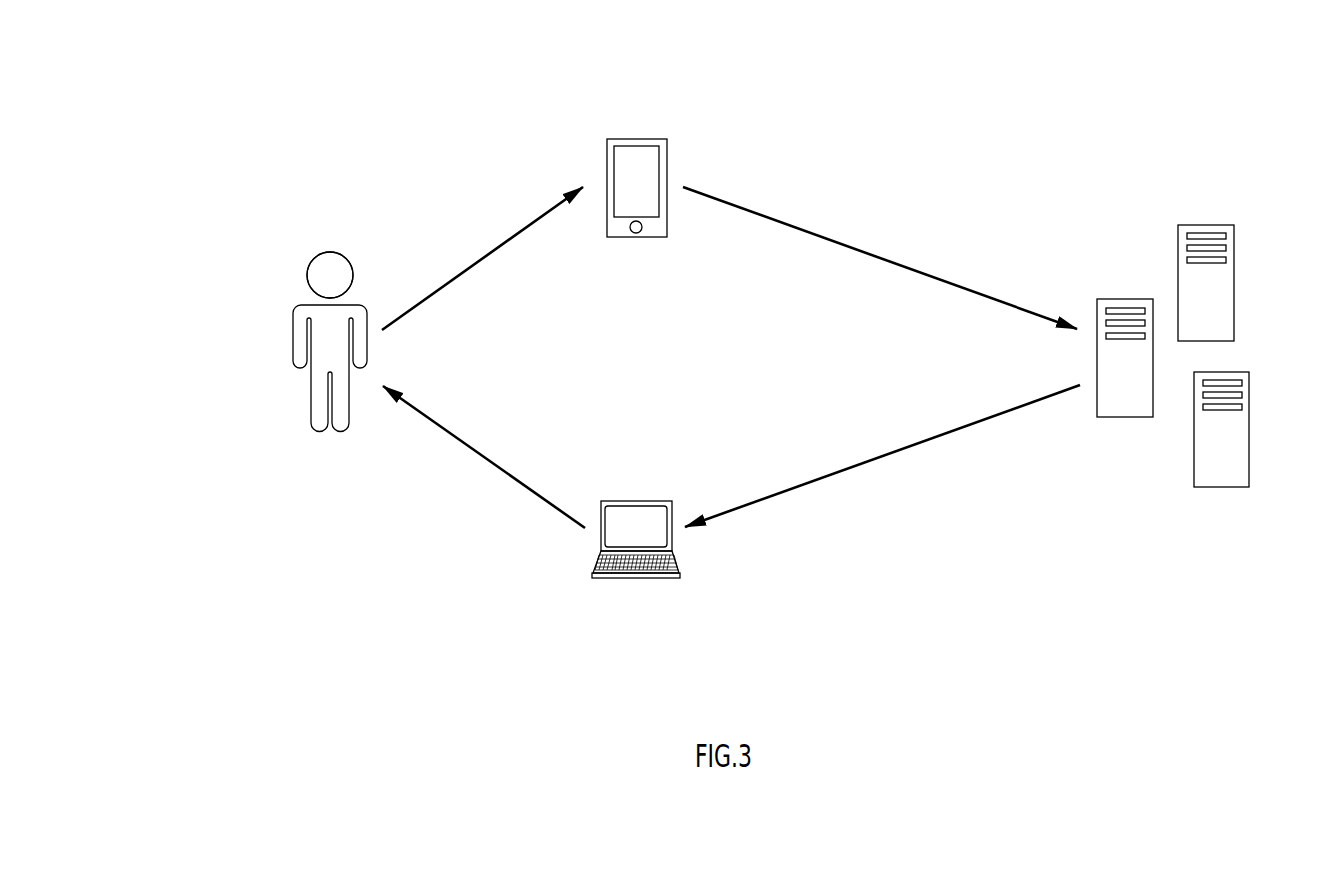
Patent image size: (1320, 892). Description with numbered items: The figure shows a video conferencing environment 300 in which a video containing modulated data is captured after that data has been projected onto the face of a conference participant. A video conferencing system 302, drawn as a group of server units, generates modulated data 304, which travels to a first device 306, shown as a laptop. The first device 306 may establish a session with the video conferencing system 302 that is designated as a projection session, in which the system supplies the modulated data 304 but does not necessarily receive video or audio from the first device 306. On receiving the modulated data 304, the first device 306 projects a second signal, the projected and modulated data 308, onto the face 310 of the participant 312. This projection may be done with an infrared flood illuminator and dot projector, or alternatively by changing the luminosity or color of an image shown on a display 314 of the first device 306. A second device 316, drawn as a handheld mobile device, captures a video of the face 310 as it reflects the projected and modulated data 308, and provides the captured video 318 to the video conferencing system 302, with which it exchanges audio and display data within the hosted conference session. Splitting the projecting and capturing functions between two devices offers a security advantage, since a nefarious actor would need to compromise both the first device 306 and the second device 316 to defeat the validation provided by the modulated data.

The video conferencing environment 300 is at (214, 202).
The video conferencing system 302 is at (1117, 242).
The modulated data 304 is at (862, 462).
The first device 306 is at (635, 501).
The projected and modulated data 308 is at (483, 455).
The face 310 is at (343, 257).
The participant 312 is at (301, 441).
The display 314 is at (500, 245).
The second device 316 is at (626, 139).
The captured video 318 is at (812, 232).